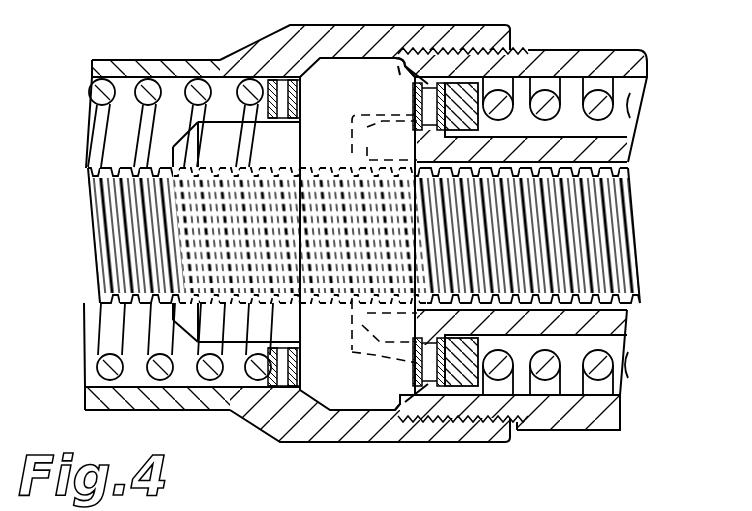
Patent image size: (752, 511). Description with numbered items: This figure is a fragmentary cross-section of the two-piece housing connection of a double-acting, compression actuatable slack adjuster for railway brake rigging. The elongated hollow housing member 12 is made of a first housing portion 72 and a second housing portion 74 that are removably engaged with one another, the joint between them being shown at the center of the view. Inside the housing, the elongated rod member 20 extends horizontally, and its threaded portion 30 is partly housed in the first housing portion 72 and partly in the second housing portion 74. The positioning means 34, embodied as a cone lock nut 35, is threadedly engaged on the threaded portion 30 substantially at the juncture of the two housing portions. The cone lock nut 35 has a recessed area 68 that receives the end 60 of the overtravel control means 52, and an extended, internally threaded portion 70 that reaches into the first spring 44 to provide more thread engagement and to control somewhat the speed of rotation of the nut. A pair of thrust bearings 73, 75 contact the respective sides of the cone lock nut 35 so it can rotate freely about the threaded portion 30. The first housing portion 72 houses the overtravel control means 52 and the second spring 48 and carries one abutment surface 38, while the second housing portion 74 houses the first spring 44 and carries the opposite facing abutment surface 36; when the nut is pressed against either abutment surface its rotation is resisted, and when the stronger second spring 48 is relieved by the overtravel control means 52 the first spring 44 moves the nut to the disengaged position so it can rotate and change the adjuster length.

The housing member 12 is at (353, 23).
The rod member 20 is at (612, 222).
The threaded portion 30 is at (103, 197).
The positioning means 34 is at (359, 412).
The cone lock nut 35 is at (390, 393).
The abutment surface 36 is at (306, 62).
The abutment surface 38 is at (396, 66).
The first spring 44 is at (150, 88).
The second spring 48 is at (598, 100).
The overtravel control mechanism 52 is at (604, 153).
The end of overtravel control means 60 is at (372, 142).
The recessed area 68 is at (356, 337).
The extended internally threaded portion 70 is at (236, 232).
The first housing portion 72 is at (565, 62).
The thrust bearing 73 is at (270, 80).
The second housing portion 74 is at (113, 66).
The thrust bearing 75 is at (422, 84).